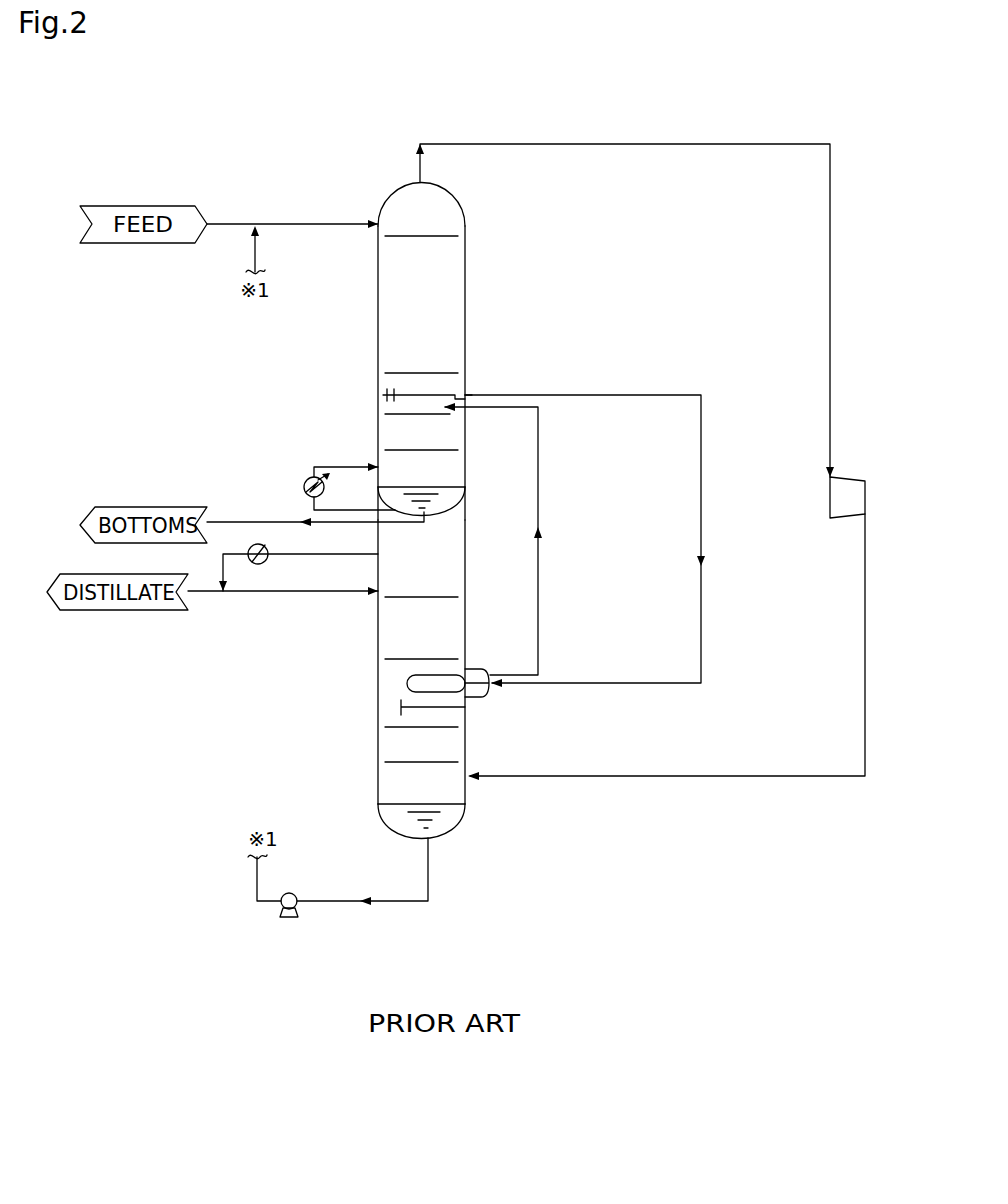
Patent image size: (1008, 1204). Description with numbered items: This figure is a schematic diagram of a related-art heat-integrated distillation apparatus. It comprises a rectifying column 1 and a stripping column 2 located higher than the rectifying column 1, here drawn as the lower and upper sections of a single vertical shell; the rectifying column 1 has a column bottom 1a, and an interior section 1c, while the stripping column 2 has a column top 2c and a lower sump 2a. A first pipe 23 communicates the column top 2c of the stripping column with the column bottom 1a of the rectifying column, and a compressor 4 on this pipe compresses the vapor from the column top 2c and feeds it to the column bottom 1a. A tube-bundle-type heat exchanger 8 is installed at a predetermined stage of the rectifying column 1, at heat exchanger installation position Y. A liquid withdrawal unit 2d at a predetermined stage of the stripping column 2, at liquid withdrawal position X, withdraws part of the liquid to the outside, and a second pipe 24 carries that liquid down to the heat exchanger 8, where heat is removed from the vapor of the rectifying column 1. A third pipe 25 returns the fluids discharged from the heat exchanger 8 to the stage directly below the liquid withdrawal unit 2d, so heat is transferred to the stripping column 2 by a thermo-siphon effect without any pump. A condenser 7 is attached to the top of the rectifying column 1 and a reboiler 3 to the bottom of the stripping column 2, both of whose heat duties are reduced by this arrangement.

The rectifying column 1 is at (377, 672).
The column bottom of the rectifying column 1a is at (458, 790).
The lower column interior section 1c is at (443, 553).
The stripping column 2 is at (376, 320).
The sump of upper column 2a is at (456, 469).
The column top of the stripping column 2c is at (441, 217).
The liquid withdrawal unit 2d is at (435, 386).
The reboiler 3 is at (307, 480).
The compressor 4 is at (850, 478).
The condenser 7 is at (268, 562).
The tube-bundle-type heat exchanger 8 is at (430, 675).
The first pipe 23 is at (699, 143).
The second pipe 24 is at (690, 395).
The third pipe 25 is at (540, 563).
The liquid withdrawal position X is at (469, 393).
The heat exchanger installation position Y is at (494, 689).